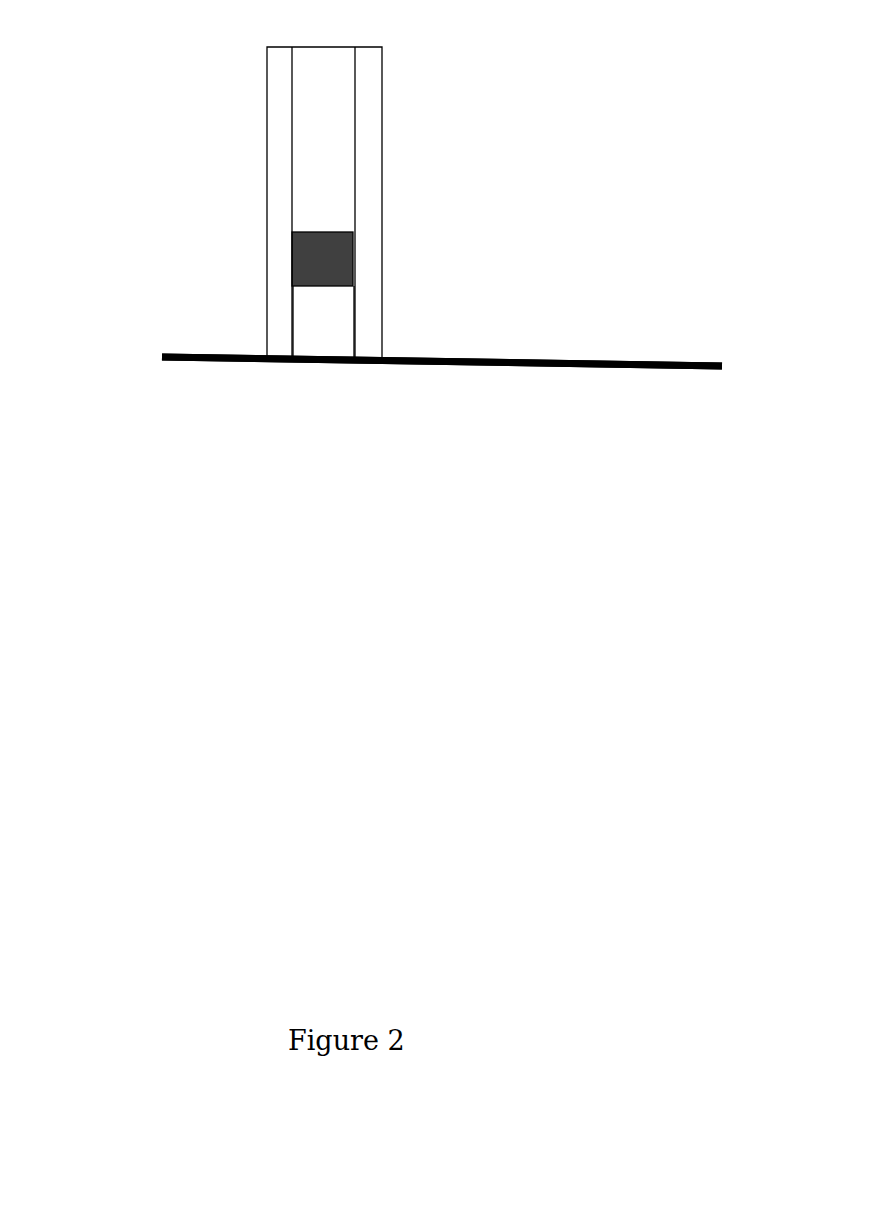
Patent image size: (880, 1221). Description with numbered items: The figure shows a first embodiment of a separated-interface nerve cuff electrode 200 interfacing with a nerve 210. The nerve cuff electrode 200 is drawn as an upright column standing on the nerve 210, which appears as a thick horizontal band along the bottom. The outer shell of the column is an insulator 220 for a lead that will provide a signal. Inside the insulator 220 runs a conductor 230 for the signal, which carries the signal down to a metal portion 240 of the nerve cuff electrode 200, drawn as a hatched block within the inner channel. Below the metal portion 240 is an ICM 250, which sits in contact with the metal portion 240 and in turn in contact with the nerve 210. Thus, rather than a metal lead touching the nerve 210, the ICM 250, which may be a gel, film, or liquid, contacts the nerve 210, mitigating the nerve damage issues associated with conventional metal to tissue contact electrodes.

The nerve cuff electrode 200 is at (107, 20).
The nerve 210 is at (717, 347).
The insulator 220 is at (391, 90).
The conductor 230 is at (283, 139).
The metal portion 240 is at (282, 251).
The ICM 250 is at (282, 314).